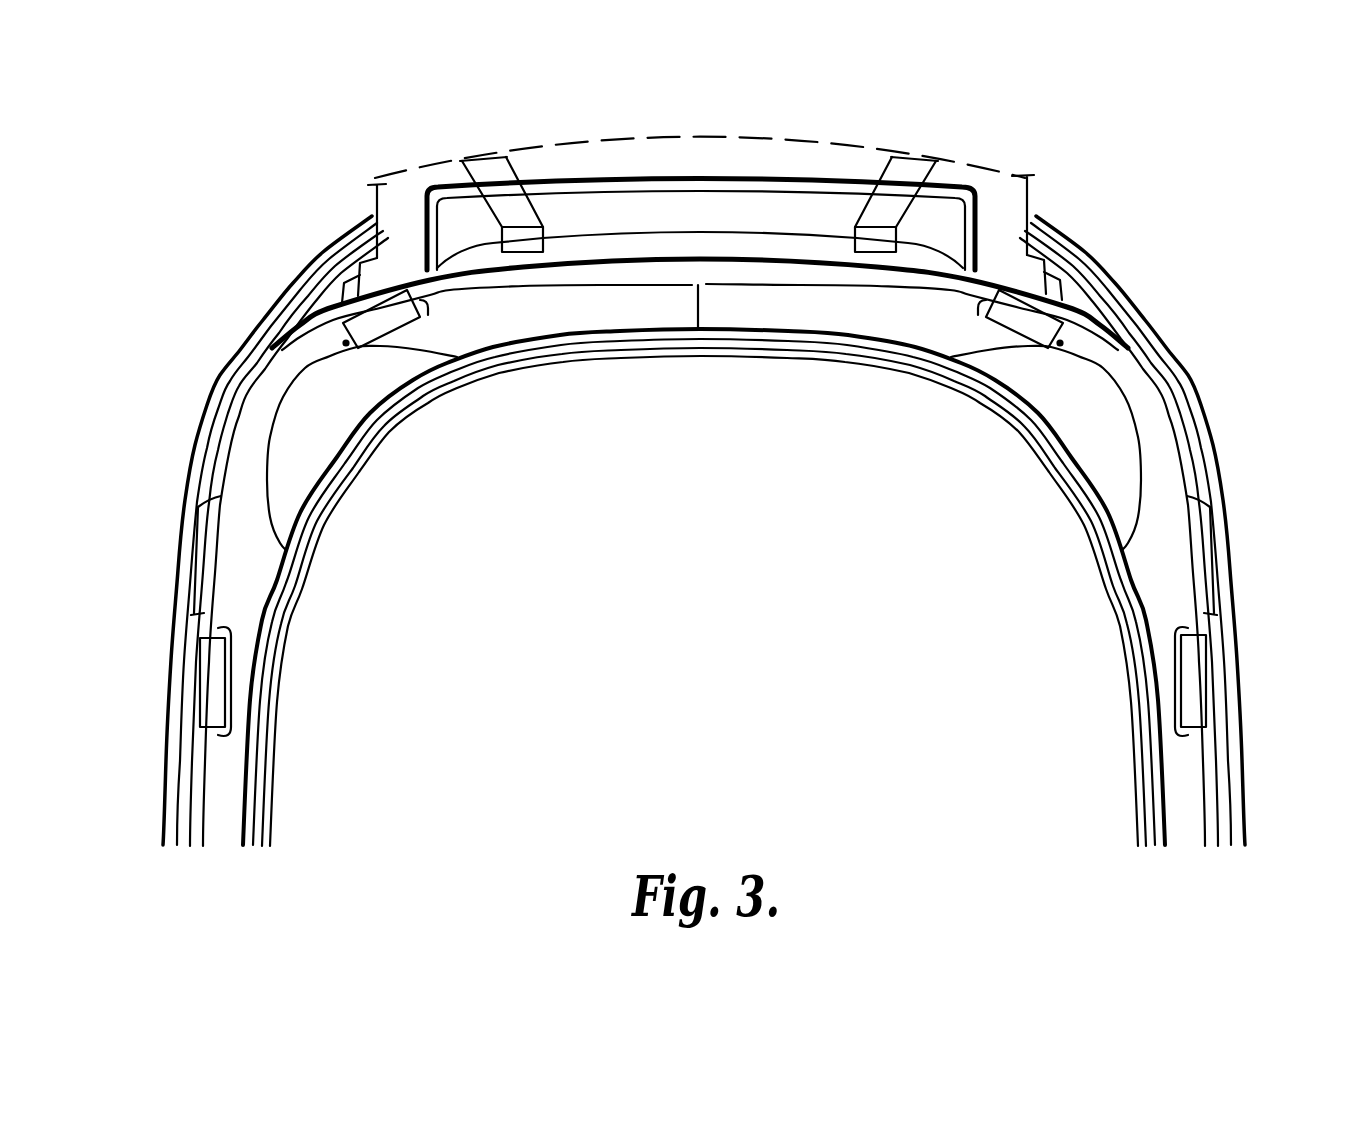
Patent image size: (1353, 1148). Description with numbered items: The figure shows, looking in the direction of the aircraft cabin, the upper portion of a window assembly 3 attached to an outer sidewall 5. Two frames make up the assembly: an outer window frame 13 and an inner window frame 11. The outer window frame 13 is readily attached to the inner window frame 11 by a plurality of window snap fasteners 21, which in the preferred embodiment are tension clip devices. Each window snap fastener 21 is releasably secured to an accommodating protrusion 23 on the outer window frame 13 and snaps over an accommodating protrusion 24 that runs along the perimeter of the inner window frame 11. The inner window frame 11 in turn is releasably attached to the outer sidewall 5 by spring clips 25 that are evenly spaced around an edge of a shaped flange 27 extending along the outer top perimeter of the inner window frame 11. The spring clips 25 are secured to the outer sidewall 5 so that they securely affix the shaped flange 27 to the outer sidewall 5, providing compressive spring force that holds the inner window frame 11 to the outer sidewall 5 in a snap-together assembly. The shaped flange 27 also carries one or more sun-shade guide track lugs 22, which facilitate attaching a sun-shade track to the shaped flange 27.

The window assembly 3 is at (1213, 455).
The outer sidewall 5 is at (1162, 187).
The inner window frame 11 is at (1243, 667).
The outer window frame 13 is at (1167, 580).
The window snap fasteners 21 is at (367, 326).
The sun-shade guide track lugs 22 is at (368, 193).
The accommodating protrusion 23 is at (258, 700).
The accommodating protrusion 24 is at (170, 647).
The spring clips 25 is at (491, 178).
The shaped flange 27 is at (748, 165).